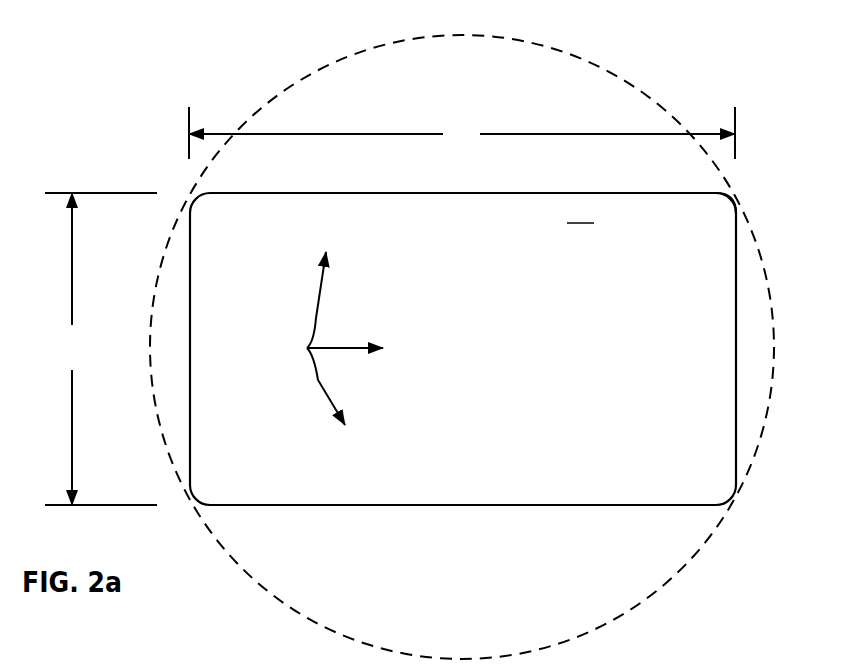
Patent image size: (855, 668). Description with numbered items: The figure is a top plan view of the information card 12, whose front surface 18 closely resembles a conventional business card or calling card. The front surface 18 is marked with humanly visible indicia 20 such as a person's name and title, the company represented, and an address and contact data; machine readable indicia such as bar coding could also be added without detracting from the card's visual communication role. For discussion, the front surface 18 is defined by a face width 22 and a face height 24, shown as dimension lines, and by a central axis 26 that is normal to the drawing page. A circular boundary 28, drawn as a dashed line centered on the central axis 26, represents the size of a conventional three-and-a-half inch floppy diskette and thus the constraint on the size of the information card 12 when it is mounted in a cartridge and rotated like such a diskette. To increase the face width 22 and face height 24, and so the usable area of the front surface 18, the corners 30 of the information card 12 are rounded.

The information card 12 is at (462, 505).
The front surface 18 is at (581, 210).
The humanly visible indicia 20 is at (307, 348).
The face width 22 is at (462, 133).
The face height 24 is at (101, 349).
The central axis 26 is at (462, 348).
The circular boundary 28 is at (586, 59).
The corners 30 is at (733, 198).